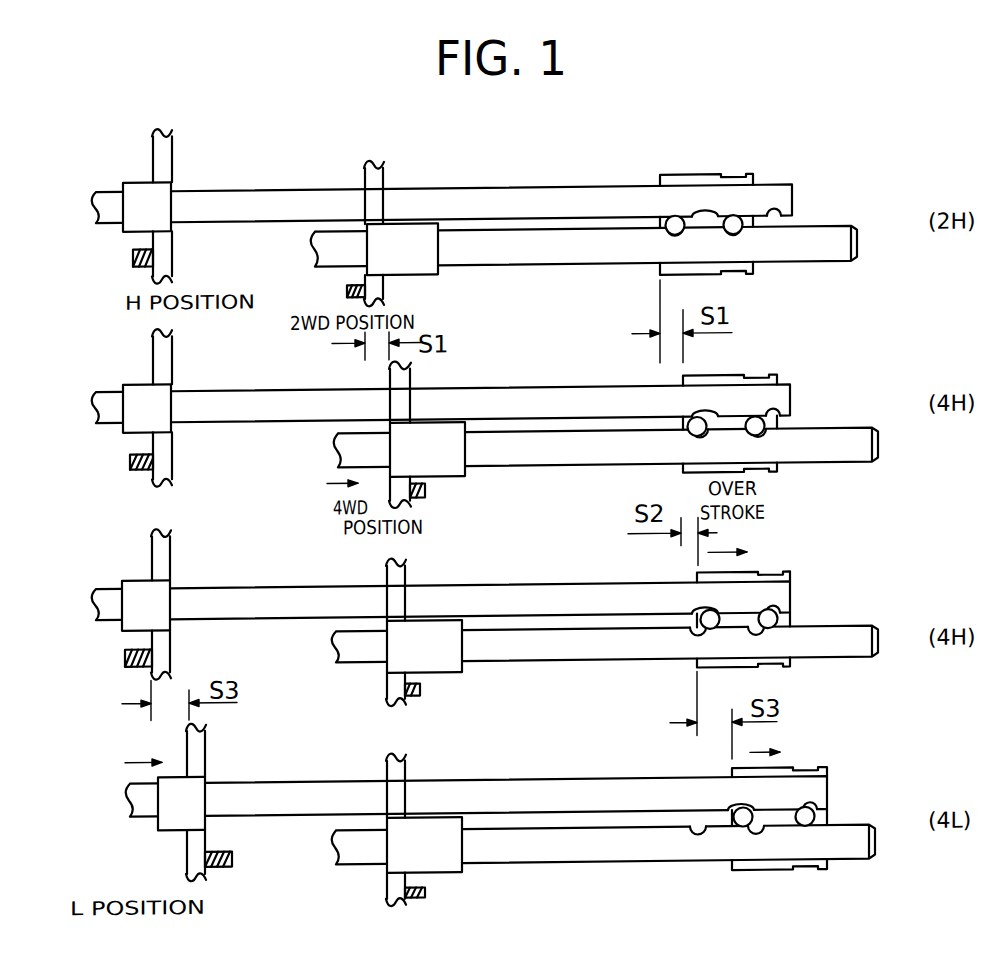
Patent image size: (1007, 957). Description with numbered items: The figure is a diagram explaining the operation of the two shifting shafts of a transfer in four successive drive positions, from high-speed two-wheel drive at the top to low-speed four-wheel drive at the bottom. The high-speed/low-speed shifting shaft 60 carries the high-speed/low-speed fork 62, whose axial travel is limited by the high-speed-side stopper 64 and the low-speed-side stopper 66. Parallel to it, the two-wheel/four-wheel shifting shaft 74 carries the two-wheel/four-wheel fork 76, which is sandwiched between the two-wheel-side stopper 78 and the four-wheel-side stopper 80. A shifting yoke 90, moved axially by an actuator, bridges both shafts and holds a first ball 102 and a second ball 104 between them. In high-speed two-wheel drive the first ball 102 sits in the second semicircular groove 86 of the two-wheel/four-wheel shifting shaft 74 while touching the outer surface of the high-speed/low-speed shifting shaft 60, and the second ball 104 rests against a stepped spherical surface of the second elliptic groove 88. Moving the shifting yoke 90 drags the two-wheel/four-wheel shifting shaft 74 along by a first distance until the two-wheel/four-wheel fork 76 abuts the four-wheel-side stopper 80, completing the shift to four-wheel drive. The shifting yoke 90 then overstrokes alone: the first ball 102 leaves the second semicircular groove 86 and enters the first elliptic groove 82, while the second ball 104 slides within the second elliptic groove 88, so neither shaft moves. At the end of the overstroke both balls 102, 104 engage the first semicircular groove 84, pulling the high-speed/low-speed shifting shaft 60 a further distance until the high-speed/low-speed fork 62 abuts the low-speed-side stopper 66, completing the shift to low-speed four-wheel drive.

The high-speed/low-speed shifting shaft 60 is at (257, 201).
The high-speed/low-speed fork 62 is at (168, 153).
The high-speed-side stopper 64 is at (140, 262).
The low-speed-side stopper 66 is at (220, 863).
The two-wheel/four-wheel shifting shaft 74 is at (512, 261).
The two-wheel/four-wheel fork 76 is at (375, 175).
The two-wheel-side stopper 78 is at (345, 289).
The four-wheel-side stopper 80 is at (418, 494).
The first elliptic groove 82 is at (705, 209).
The first semicircular groove 84 is at (785, 218).
The second semicircular groove 86 is at (672, 233).
The second elliptic groove 88 is at (745, 234).
The shifting yoke 90 is at (700, 176).
The first ball 102 is at (670, 222).
The second ball 104 is at (737, 233).